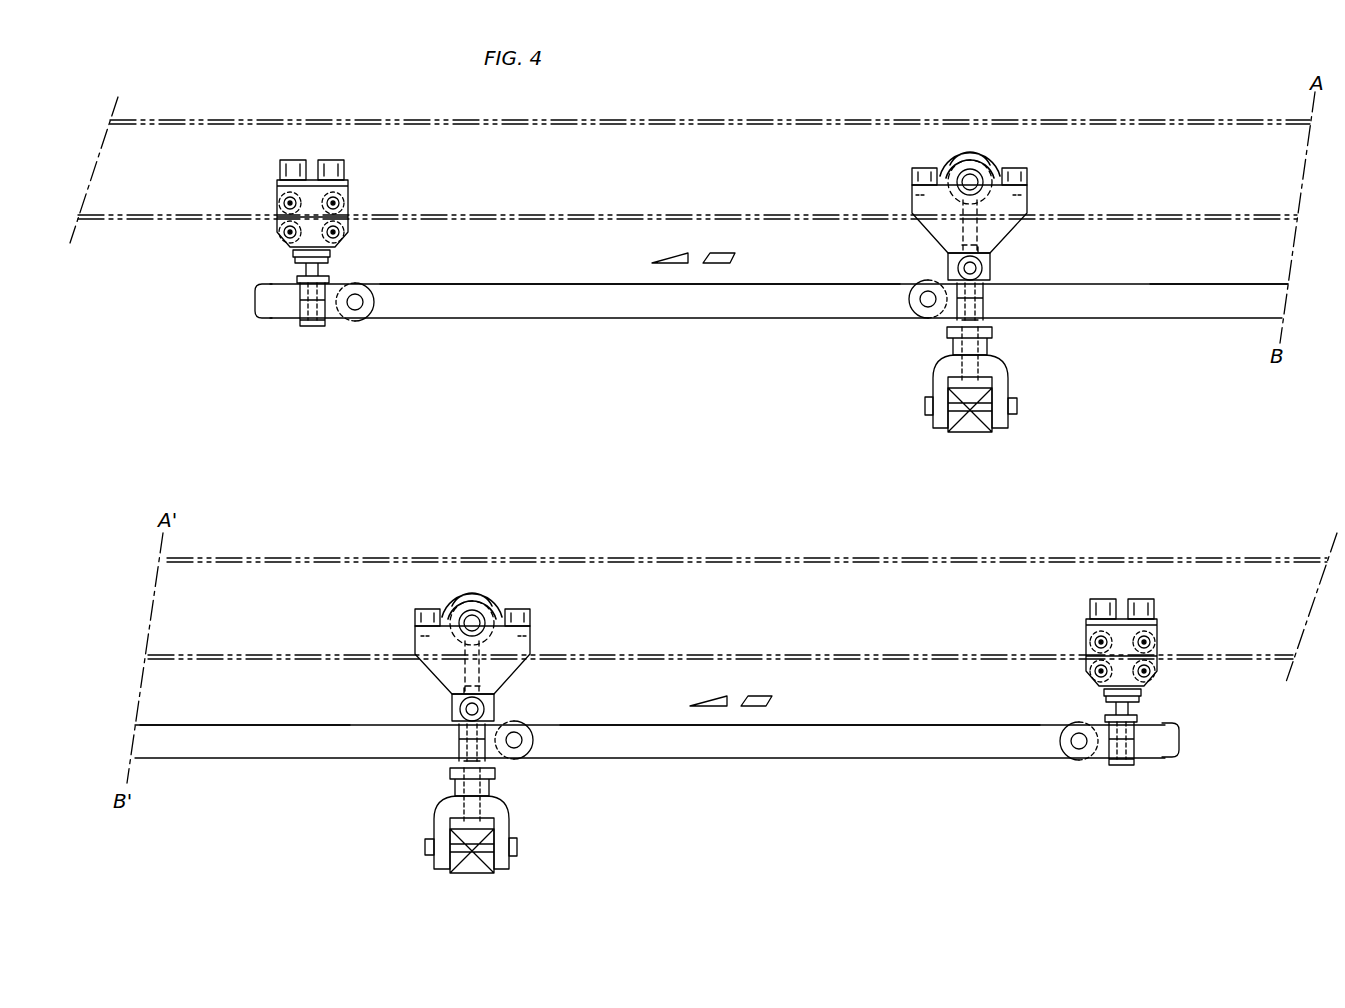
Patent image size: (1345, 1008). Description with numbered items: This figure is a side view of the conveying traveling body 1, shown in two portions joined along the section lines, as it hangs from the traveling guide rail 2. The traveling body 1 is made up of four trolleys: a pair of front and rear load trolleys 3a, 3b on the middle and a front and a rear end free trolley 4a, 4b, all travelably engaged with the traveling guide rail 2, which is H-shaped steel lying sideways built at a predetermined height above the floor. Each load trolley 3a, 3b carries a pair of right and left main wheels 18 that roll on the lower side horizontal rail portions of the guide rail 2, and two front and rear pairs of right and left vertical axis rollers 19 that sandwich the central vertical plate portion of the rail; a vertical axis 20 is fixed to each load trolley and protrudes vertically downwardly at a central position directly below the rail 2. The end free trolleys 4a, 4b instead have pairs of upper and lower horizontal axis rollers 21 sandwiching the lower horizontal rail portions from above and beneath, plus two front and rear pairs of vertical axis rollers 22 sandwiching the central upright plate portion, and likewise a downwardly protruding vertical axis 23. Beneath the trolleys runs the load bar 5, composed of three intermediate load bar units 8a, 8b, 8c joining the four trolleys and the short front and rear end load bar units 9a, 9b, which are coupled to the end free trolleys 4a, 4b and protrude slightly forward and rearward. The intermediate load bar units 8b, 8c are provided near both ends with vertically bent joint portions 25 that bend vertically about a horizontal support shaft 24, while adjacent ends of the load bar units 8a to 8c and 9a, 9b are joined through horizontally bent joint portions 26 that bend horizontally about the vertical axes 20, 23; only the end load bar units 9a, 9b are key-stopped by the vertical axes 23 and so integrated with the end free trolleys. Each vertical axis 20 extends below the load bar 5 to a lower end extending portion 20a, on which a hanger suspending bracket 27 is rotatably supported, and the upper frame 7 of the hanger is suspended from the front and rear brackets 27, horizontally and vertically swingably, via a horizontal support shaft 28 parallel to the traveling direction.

The conveying traveling body 1 is at (1002, 146).
The traveling guide rail 2 is at (1150, 118).
The front load trolley 3a is at (912, 205).
The rear load trolley 3b is at (520, 645).
The front end free trolley 4a is at (348, 183).
The rear end free trolley 4b is at (1092, 630).
The load bar 5 is at (1165, 278).
The upper frame 7 is at (962, 435).
The intermediate load bar unit 8a is at (1233, 290).
The intermediate load bar unit 8b is at (495, 305).
The intermediate load bar unit 8c is at (910, 738).
The front end load bar unit 9a is at (272, 300).
The rear end load bar unit 9b is at (1172, 742).
The main wheel 18 is at (968, 150).
The vertical axis roller 19 is at (913, 170).
The vertical axis 20 is at (1003, 214).
The lower end extending portion 20a is at (947, 346).
The horizontal axis roller 21 is at (278, 227).
The vertical axis roller 22 is at (331, 162).
The vertical axis 23 is at (331, 263).
The horizontal support shaft 24 is at (928, 307).
The vertically bent joint portion 25 is at (922, 292).
The horizontally bent joint portion 26 is at (976, 307).
The hanger suspending bracket 27 is at (925, 403).
The horizontal support shaft 28 is at (983, 418).